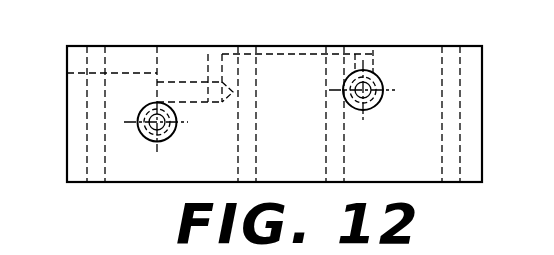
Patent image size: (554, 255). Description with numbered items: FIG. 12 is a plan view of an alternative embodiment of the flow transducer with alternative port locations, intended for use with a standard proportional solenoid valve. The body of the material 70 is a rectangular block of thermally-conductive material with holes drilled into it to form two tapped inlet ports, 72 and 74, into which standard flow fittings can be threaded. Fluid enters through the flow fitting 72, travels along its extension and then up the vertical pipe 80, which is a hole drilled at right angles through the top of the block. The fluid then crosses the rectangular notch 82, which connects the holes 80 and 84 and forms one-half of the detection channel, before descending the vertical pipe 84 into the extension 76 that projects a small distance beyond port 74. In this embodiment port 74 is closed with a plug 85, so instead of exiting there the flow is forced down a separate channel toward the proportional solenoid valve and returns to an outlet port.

The body of the material 70 is at (467, 102).
The inlet port 72 is at (373, 101).
The inlet port 74 is at (133, 82).
The extension 76 is at (197, 102).
The hole 80 is at (367, 60).
The rectangular notch 82 is at (280, 50).
The hole 84 is at (212, 67).
The end portion 85 is at (78, 93).